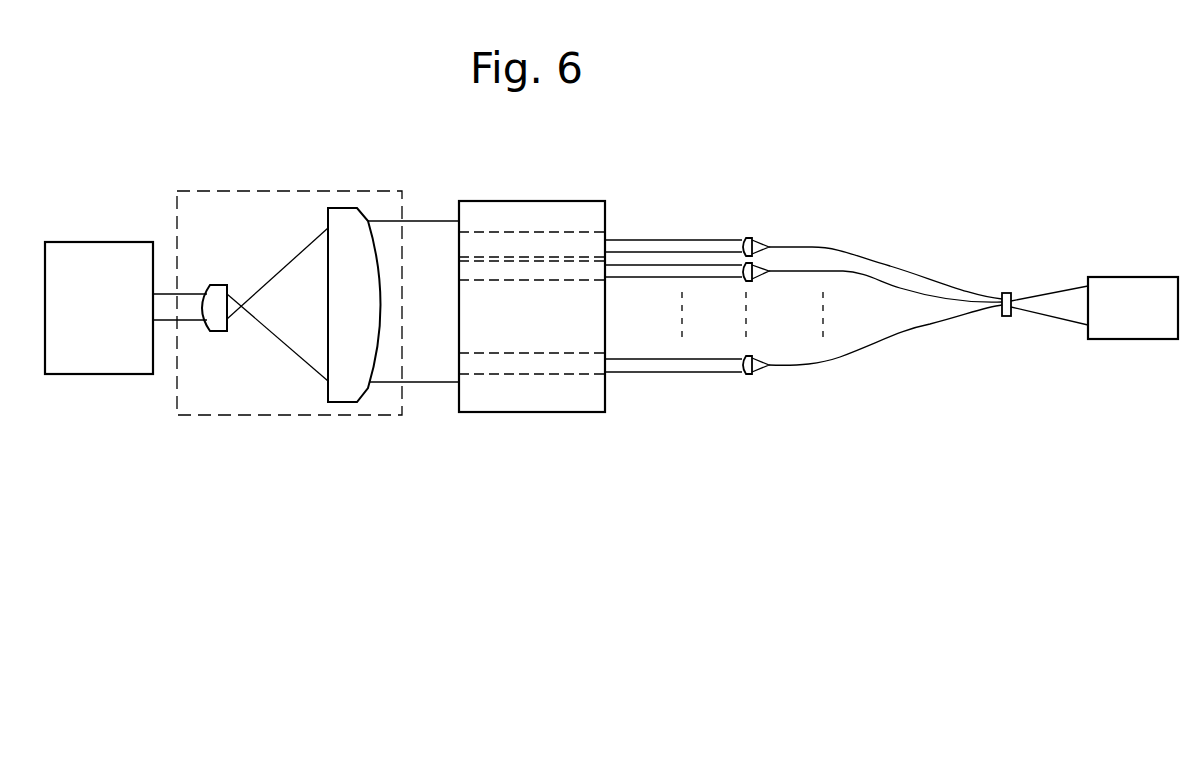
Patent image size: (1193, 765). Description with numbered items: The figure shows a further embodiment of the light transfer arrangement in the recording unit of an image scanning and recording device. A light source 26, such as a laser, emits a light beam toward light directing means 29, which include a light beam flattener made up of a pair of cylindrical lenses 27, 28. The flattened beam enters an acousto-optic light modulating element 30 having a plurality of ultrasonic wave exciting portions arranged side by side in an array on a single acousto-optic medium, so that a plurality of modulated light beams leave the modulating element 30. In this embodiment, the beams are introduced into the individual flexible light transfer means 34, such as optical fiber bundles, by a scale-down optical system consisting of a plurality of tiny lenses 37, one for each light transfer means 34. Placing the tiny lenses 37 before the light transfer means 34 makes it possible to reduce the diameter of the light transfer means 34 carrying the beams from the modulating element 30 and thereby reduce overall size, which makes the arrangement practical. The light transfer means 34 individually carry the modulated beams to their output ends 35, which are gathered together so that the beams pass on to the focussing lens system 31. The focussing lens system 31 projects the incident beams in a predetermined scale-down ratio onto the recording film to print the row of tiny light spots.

The light source 26 is at (121, 370).
The cylindrical lens 27 is at (220, 285).
The cylindrical lens 28 is at (340, 209).
The light directing means 29 is at (280, 409).
The acousto-optic light modulating element 30 is at (527, 405).
The focussing lens system 31 is at (1110, 331).
The light transfer means 34 is at (843, 270).
The output ends 35 is at (1007, 318).
The tiny lenses 37 is at (746, 236).